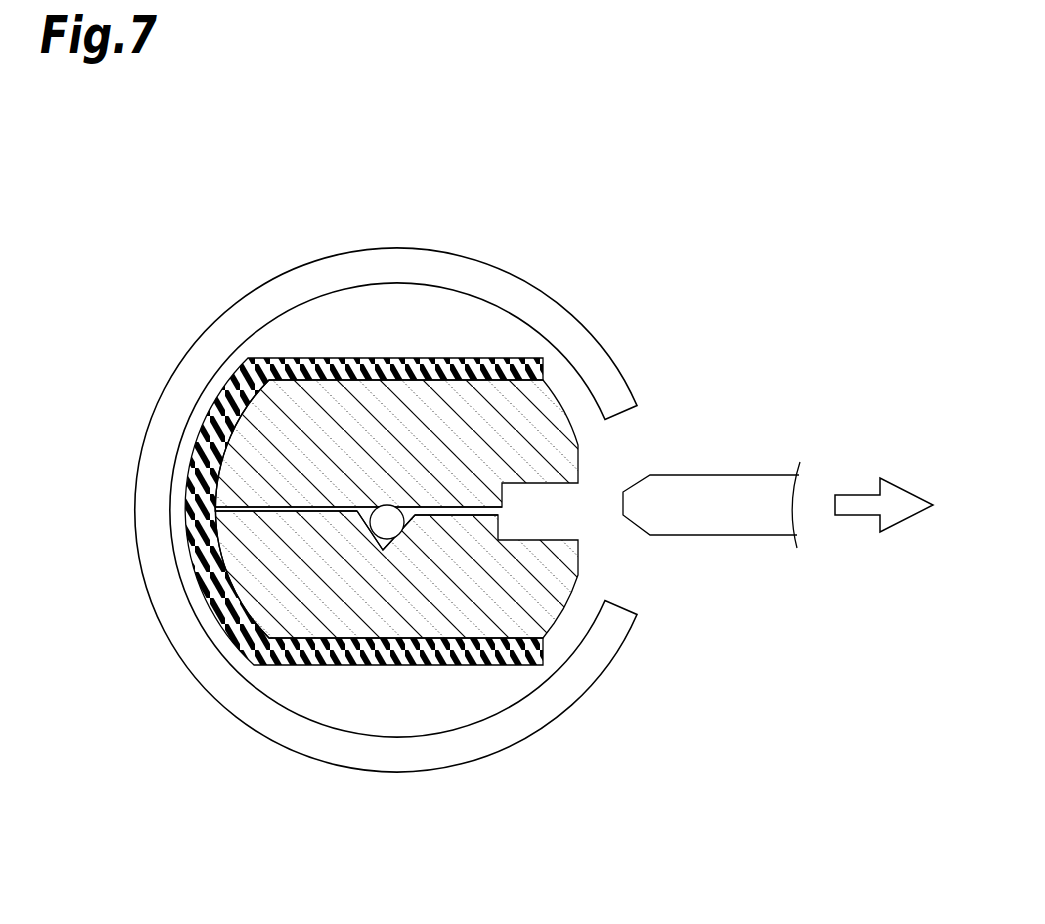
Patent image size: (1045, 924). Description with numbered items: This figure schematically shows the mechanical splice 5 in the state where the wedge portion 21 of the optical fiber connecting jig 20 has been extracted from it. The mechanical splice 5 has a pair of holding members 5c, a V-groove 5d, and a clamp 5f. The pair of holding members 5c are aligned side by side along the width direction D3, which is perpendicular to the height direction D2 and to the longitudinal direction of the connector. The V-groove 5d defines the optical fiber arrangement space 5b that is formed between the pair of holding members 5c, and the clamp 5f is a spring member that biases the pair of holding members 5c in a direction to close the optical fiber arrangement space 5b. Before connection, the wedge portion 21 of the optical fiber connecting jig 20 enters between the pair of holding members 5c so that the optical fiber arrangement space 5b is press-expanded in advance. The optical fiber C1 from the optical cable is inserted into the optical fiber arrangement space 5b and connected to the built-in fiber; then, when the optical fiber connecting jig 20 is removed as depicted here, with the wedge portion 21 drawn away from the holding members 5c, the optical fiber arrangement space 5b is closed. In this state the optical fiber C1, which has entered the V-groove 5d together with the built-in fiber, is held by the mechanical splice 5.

The mechanical splice 5 is at (573, 416).
The optical fiber arrangement space 5b is at (363, 510).
The holding members 5c is at (308, 412).
The V-groove 5d is at (403, 532).
The clamp 5f is at (502, 360).
The optical fiber C1 is at (388, 507).
The optical fiber connecting jig 20 is at (711, 552).
The wedge portion 21 is at (726, 512).
The width direction D3 is at (102, 455).
The height direction D2 is at (725, 808).